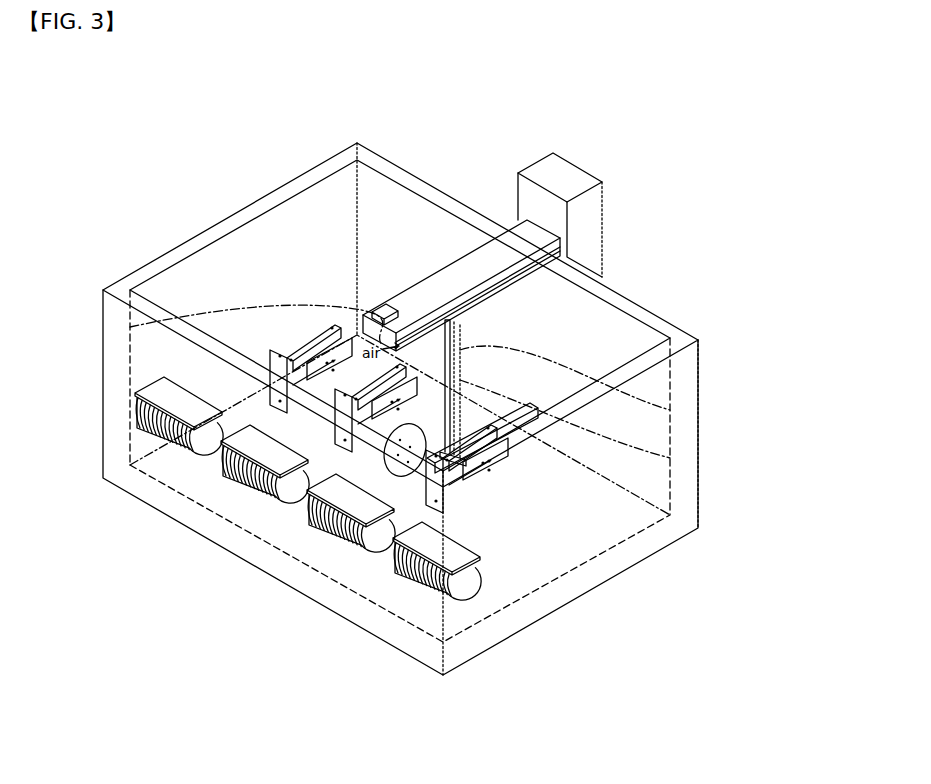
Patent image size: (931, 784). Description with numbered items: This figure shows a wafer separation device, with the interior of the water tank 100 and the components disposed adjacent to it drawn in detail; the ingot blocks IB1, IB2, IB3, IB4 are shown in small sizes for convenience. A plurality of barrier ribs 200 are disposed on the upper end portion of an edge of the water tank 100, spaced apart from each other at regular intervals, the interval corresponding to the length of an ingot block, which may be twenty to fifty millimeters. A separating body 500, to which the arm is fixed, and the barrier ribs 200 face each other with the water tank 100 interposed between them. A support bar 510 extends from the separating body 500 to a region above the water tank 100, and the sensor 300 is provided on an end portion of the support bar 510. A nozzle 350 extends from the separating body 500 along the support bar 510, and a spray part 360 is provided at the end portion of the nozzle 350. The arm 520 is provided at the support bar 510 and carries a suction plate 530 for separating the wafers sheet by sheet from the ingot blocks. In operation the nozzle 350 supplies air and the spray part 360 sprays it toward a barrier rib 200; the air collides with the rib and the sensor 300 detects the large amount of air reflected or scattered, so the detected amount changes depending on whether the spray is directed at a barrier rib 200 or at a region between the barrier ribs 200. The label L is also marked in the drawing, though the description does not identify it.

The water tank 100 is at (164, 262).
The light L is at (242, 334).
The barrier rib 200 is at (364, 370).
The sensor 300 is at (374, 303).
The nozzle 350 is at (530, 273).
The spray part 360 is at (540, 425).
The separating body 500 is at (563, 176).
The support bar 510 is at (475, 254).
The arm 520 is at (460, 356).
The suction plate 530 is at (403, 478).
The ingot block IB1 is at (422, 590).
The ingot block IB2 is at (337, 541).
The ingot block IB3 is at (247, 493).
The ingot block IB4 is at (178, 448).